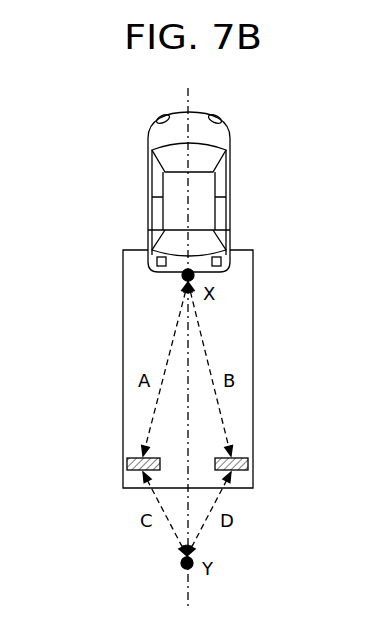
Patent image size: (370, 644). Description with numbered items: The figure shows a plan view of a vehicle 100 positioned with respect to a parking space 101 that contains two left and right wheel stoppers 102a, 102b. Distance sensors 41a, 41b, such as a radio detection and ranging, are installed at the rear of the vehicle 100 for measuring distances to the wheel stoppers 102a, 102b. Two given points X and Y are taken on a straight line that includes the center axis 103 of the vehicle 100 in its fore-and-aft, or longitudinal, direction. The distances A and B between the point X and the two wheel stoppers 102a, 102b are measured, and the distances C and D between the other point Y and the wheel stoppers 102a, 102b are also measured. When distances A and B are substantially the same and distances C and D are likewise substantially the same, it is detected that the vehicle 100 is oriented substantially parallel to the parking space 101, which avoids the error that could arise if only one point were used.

The vehicle 100 is at (231, 180).
The parking space 101 is at (253, 352).
The wheel stopper 102a is at (127, 465).
The wheel stopper 102b is at (248, 465).
The center axis 103 is at (190, 132).
The distance sensor 41a is at (160, 267).
The distance sensor 41b is at (219, 267).